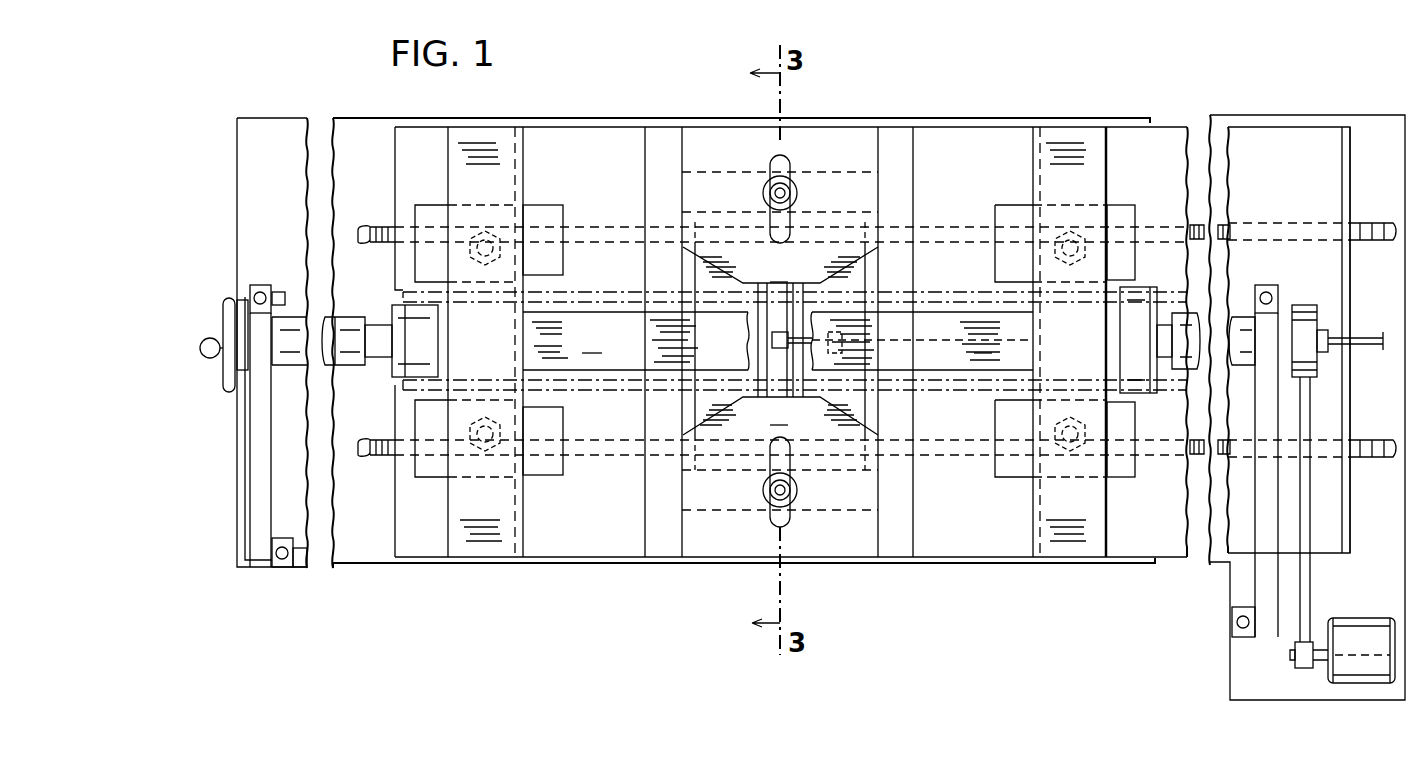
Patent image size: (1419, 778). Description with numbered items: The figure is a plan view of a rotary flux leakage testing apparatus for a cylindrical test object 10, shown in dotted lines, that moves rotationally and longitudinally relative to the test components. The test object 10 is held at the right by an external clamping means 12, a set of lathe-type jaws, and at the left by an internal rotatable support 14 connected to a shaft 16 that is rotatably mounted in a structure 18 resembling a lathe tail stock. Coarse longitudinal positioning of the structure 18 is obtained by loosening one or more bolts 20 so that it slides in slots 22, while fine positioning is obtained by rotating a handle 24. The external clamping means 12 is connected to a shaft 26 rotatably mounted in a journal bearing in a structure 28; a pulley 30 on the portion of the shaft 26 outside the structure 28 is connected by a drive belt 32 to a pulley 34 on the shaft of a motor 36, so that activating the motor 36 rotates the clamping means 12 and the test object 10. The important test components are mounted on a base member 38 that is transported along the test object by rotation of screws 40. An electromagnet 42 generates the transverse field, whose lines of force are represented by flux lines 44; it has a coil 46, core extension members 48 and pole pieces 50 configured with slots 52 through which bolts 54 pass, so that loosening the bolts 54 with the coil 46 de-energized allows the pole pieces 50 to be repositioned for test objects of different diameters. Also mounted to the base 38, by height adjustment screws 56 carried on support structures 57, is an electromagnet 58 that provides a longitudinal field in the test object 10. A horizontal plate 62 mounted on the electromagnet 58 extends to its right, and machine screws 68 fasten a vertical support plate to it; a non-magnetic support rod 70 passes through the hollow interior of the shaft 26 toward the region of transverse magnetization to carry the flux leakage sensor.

The test object 10 is at (608, 295).
The external clamping means 12 is at (1149, 297).
The internal rotatable support 14 is at (406, 322).
The shaft 16 is at (400, 401).
The structure 18 is at (259, 279).
The bolts 20 is at (262, 292).
The slots 22 is at (290, 296).
The handle 24 is at (208, 336).
The shaft 26 is at (1180, 370).
The structure 28 is at (1272, 279).
The pulley 30 is at (1305, 306).
The drive belt 32 is at (1310, 430).
The pulley 34 is at (1298, 654).
The motor 36 is at (1360, 618).
The base member 38 is at (641, 116).
The screws 40 is at (1370, 223).
The electromagnet 42 is at (706, 566).
The flux lines 44 is at (758, 283).
The coil 46 is at (688, 278).
The core extension members 48 is at (773, 425).
The pole pieces 50 is at (855, 120).
The slots 52 is at (770, 164).
The bolts 54 is at (797, 193).
The height adjustment screws 56 is at (485, 230).
The support structures 57 is at (544, 205).
The electromagnet 58 is at (566, 311).
The horizontal plate 62 is at (1292, 110).
The machine screws 68 is at (1352, 165).
The support rod 70 is at (1370, 338).